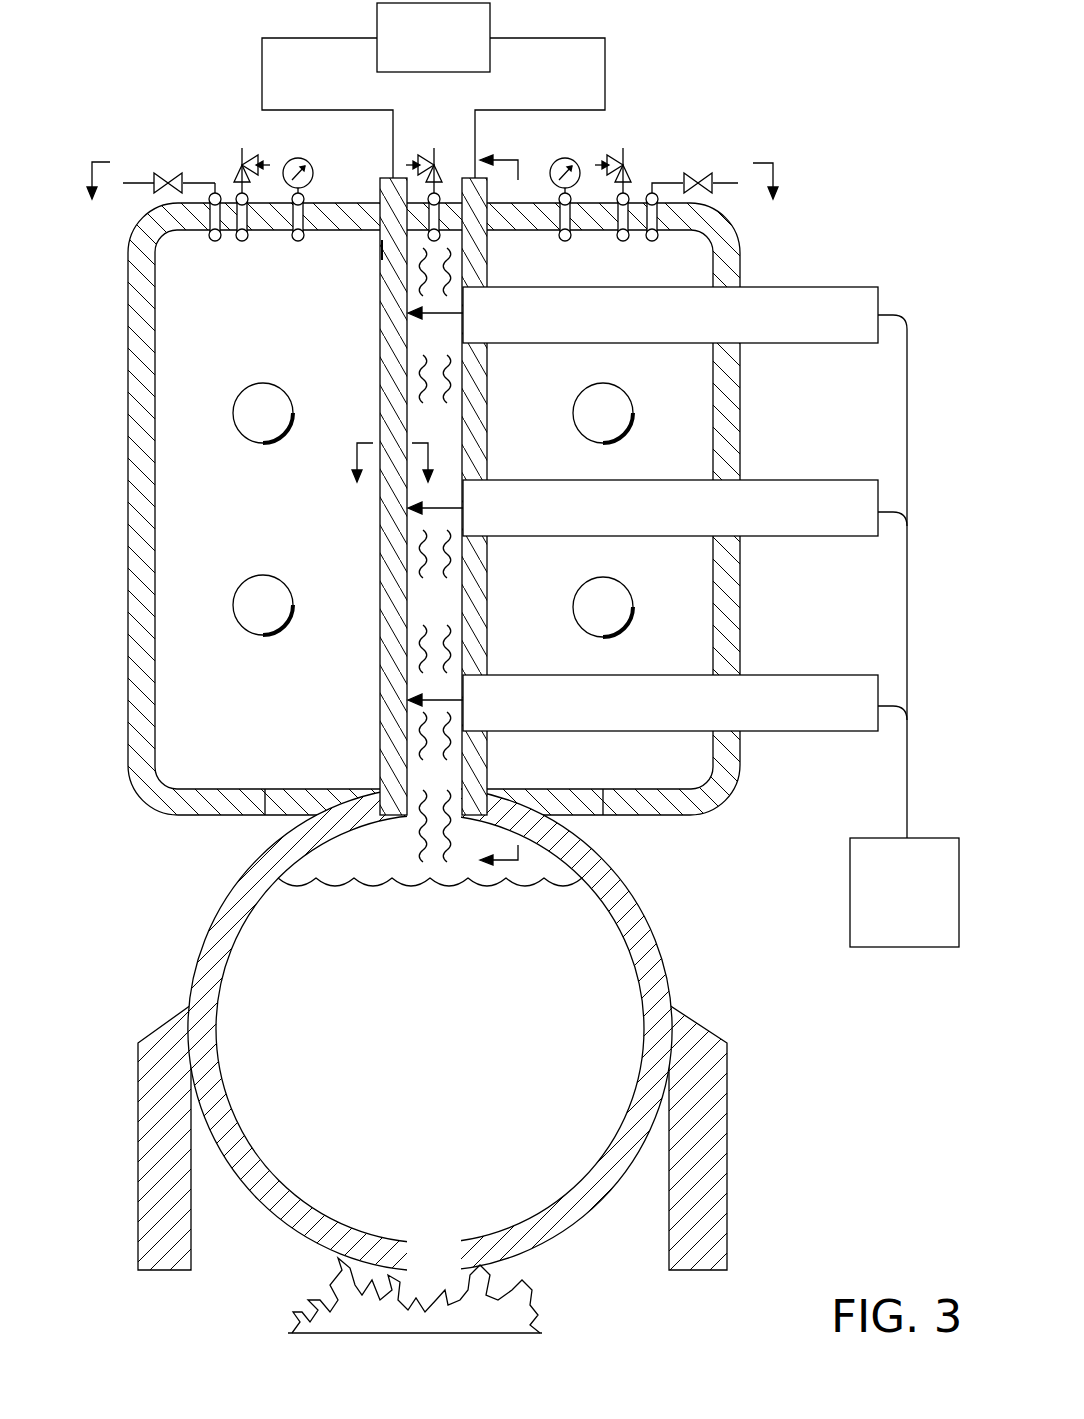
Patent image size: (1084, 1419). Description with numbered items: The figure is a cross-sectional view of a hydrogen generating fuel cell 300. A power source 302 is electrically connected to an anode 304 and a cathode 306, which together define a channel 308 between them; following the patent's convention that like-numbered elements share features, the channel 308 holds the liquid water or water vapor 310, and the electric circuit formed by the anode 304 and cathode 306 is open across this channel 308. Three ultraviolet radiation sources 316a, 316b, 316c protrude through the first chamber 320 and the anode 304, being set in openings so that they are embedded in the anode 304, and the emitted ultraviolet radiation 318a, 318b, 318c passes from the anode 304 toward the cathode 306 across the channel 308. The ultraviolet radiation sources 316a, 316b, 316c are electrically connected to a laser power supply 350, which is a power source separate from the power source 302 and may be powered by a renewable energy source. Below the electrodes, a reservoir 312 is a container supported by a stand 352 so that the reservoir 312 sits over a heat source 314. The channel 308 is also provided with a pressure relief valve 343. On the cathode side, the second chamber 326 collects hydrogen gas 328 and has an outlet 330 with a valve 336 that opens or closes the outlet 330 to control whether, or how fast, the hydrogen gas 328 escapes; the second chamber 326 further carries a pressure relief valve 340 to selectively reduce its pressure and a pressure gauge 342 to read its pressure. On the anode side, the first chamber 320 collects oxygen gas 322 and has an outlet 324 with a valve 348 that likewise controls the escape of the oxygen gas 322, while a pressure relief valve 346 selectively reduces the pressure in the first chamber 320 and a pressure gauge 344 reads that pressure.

The fuel cell 300 is at (800, 90).
The power source 302 is at (377, 28).
The anode 304 is at (488, 190).
The cathode 306 is at (379, 192).
The channel 308 is at (456, 618).
The water/water vapor 310 is at (430, 368).
The reservoir 312 is at (459, 1008).
The heat source 314 is at (497, 1295).
The ultraviolet radiation source 316a is at (763, 287).
The ultraviolet radiation source 316b is at (763, 480).
The ultraviolet radiation source 316c is at (763, 675).
The ultraviolet radiation 318a is at (463, 316).
The ultraviolet radiation 318b is at (463, 506).
The ultraviolet radiation 318c is at (463, 702).
The first chamber 320 is at (625, 773).
The oxygen gas 322 is at (633, 400).
The outlet 324 is at (650, 195).
The second chamber 326 is at (285, 713).
The hydrogen gas 328 is at (232, 603).
The outlet 330 is at (215, 192).
The valve 336 is at (160, 197).
The pressure relief valve 340 is at (247, 155).
The pressure gauge 342 is at (293, 193).
The pressure relief valve 343 is at (380, 247).
The pressure gauge 344 is at (582, 182).
The pressure relief valve 346 is at (628, 173).
The valve 348 is at (737, 211).
The laser power supply 350 is at (850, 890).
The stand 352 is at (727, 1133).